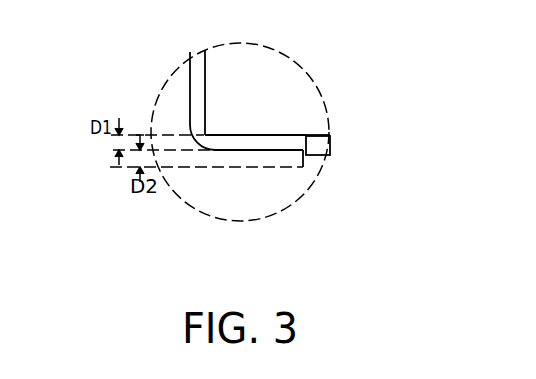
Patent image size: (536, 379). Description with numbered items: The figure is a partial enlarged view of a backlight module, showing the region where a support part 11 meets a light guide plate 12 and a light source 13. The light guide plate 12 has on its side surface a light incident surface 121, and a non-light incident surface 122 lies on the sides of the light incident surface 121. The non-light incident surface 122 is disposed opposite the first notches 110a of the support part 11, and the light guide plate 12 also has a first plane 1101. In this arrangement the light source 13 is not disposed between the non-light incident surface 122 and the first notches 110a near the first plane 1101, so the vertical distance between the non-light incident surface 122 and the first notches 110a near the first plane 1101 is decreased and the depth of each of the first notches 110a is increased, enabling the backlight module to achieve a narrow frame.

The support part 11 is at (243, 134).
The light guide plate 12 is at (205, 67).
The light incident surface 121 is at (323, 136).
The non-light incident surface 122 is at (245, 135).
The light source 13 is at (315, 145).
The first notches 110a is at (252, 190).
The first plane 1101 is at (292, 150).